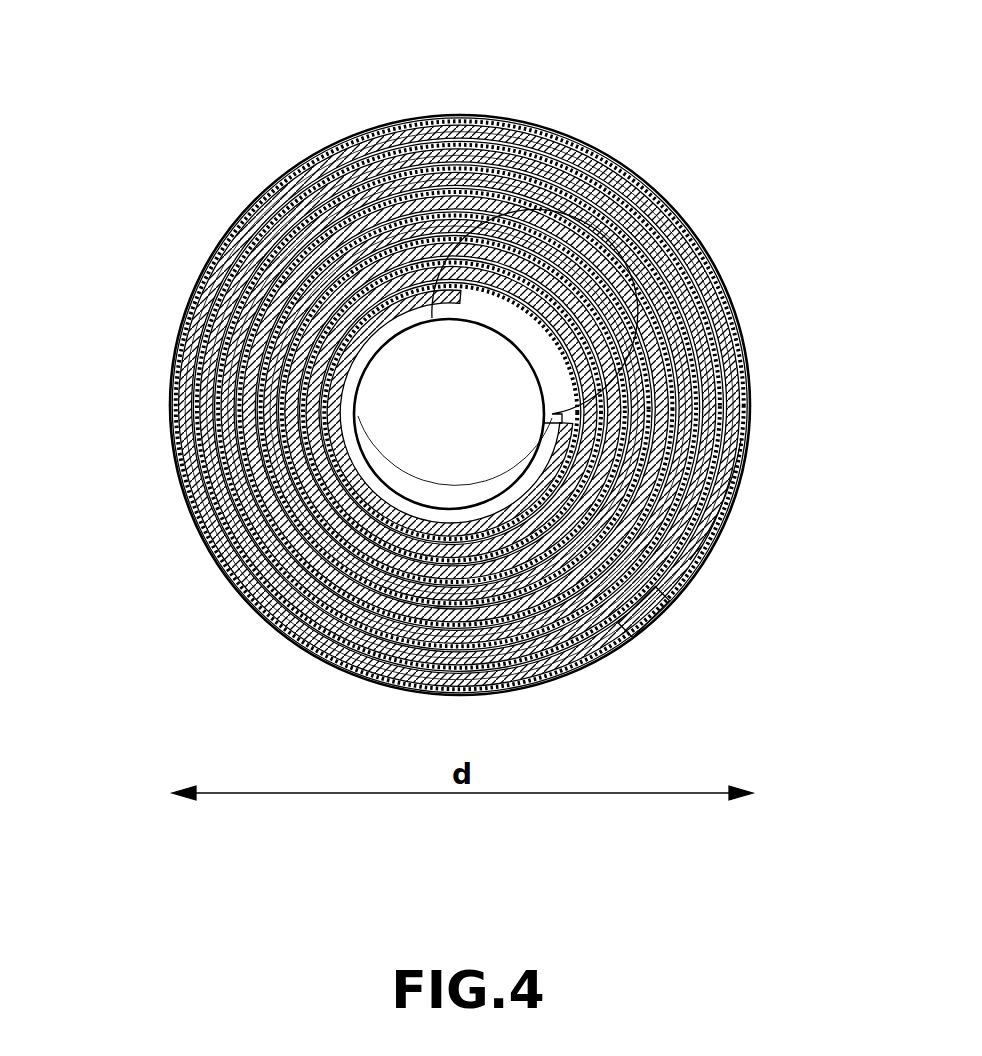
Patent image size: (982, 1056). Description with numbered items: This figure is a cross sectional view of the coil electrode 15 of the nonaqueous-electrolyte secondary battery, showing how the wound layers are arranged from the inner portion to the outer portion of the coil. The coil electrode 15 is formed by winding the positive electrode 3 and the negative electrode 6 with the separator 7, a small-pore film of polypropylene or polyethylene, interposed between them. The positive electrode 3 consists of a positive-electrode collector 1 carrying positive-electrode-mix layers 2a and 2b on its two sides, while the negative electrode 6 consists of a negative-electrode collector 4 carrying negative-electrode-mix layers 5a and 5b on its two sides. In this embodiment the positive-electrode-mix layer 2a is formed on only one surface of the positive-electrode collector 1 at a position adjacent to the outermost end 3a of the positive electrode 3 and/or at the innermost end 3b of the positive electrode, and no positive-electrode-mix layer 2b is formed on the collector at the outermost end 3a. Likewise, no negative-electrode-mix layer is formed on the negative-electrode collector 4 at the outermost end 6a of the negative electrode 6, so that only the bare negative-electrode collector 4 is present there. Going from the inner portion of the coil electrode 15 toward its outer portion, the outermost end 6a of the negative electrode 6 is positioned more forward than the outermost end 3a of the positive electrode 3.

The positive-electrode collector 1 is at (650, 192).
The positive-electrode-mix layer 2a is at (500, 235).
The positive-electrode-mix layer 2b is at (203, 563).
The positive electrode 3 is at (92, 458).
The outermost end of the positive electrode 3a is at (697, 537).
The innermost end of the positive electrode 3b is at (363, 307).
The negative-electrode collector 4 is at (667, 580).
The negative-electrode-mix layer 5a is at (227, 273).
The negative-electrode-mix layer 5b is at (200, 353).
The negative electrode 6 is at (92, 235).
The outermost end of the negative electrode 6a is at (620, 623).
The separator 7 is at (356, 175).
The coil electrode 15 is at (291, 657).